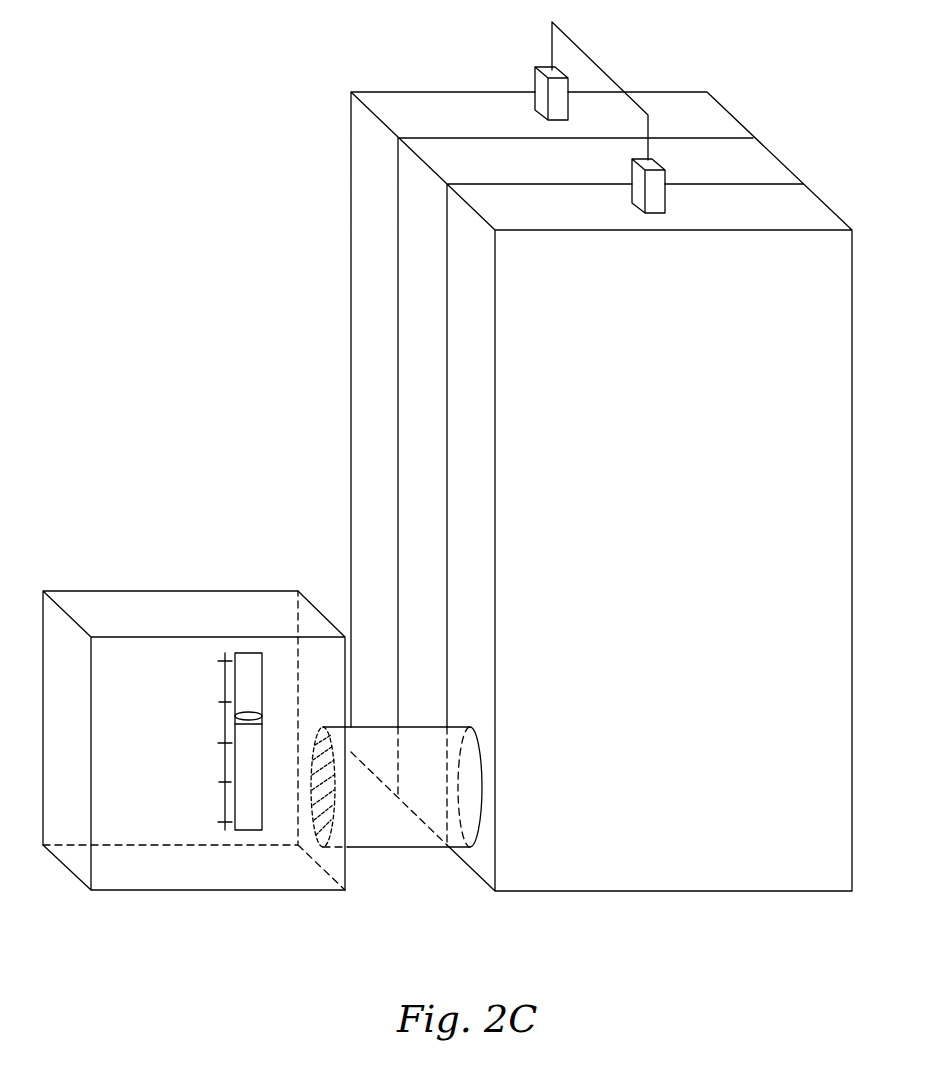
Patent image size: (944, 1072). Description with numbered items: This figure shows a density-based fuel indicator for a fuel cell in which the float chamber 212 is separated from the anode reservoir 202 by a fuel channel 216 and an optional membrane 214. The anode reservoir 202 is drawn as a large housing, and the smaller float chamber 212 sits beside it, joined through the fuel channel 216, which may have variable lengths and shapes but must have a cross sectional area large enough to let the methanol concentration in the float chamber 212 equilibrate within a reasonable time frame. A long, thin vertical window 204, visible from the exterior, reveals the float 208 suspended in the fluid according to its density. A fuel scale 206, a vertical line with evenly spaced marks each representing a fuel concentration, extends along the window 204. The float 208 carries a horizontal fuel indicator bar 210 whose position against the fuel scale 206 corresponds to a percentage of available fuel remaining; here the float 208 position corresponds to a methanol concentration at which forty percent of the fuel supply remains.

The anode reservoir 202 is at (518, 362).
The window 204 is at (245, 817).
The fuel scale 206 is at (225, 798).
The float 208 is at (243, 737).
The fuel indicator bar 210 is at (229, 723).
The float chamber 212 is at (67, 637).
The semi-permeable membrane 214 is at (322, 818).
The fuel channel 216 is at (402, 837).